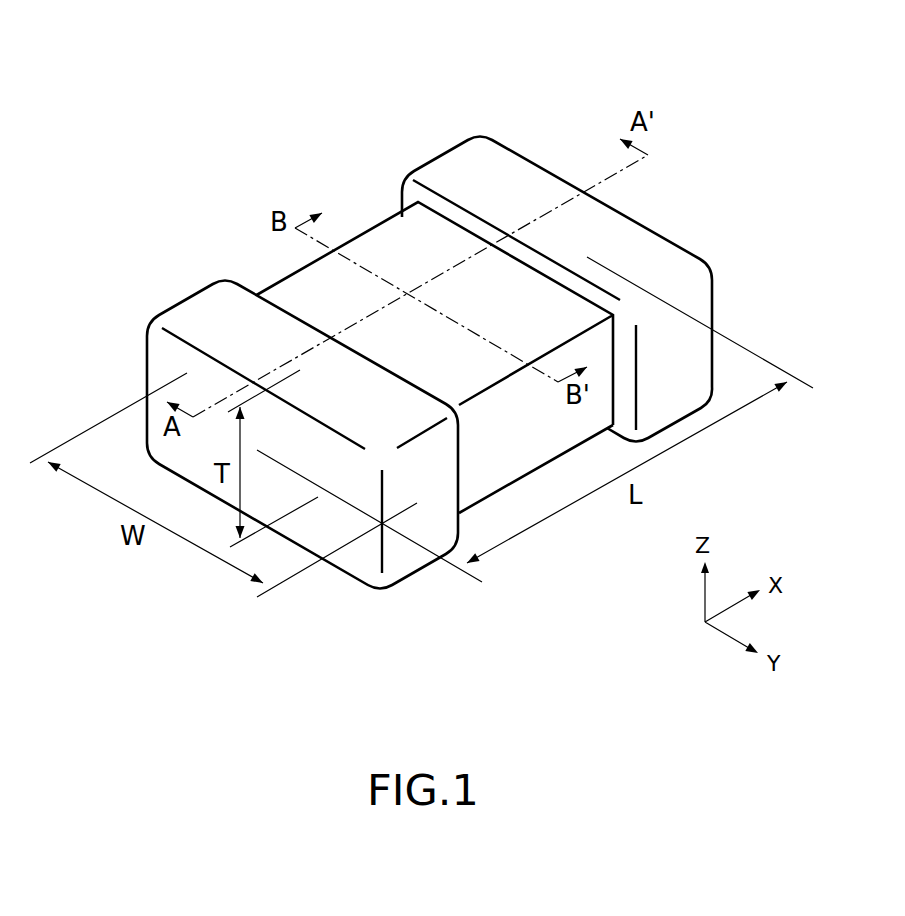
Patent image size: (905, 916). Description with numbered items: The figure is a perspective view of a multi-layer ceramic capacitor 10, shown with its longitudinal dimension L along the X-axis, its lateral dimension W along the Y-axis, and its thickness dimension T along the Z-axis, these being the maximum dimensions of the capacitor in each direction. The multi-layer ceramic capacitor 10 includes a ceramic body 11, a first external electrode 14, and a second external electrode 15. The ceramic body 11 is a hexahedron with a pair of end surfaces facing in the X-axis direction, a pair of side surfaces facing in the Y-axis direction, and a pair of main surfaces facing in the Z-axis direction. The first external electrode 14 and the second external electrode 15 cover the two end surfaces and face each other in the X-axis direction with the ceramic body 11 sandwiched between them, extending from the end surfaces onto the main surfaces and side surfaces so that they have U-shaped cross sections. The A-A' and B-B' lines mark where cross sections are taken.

The multi-layer ceramic capacitor 10 is at (534, 112).
The ceramic body 11 is at (366, 212).
The first external electrode 14 is at (200, 317).
The second external electrode 15 is at (455, 170).